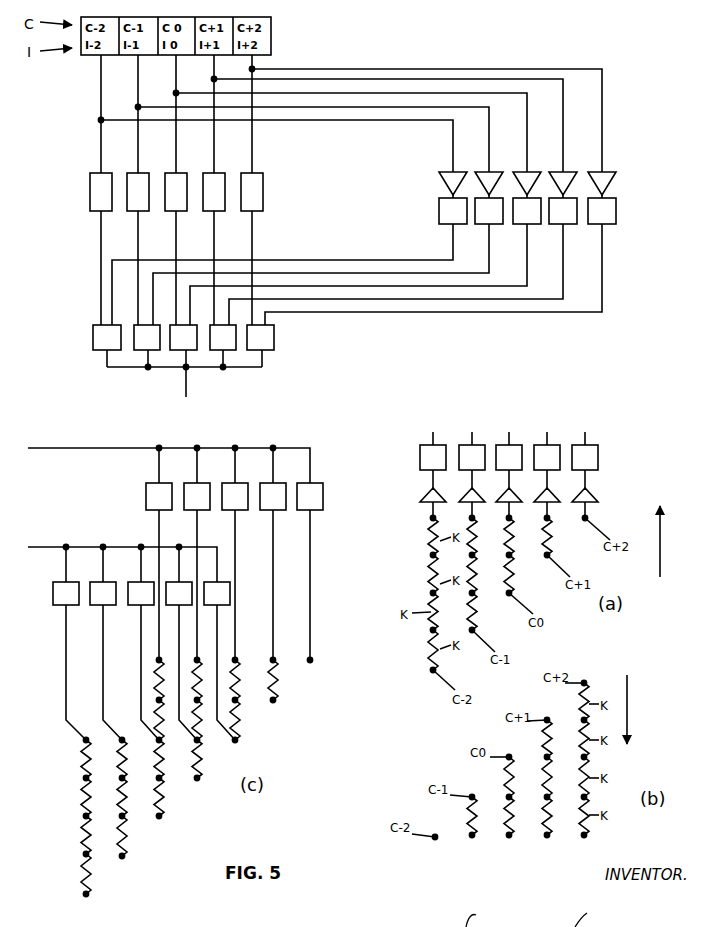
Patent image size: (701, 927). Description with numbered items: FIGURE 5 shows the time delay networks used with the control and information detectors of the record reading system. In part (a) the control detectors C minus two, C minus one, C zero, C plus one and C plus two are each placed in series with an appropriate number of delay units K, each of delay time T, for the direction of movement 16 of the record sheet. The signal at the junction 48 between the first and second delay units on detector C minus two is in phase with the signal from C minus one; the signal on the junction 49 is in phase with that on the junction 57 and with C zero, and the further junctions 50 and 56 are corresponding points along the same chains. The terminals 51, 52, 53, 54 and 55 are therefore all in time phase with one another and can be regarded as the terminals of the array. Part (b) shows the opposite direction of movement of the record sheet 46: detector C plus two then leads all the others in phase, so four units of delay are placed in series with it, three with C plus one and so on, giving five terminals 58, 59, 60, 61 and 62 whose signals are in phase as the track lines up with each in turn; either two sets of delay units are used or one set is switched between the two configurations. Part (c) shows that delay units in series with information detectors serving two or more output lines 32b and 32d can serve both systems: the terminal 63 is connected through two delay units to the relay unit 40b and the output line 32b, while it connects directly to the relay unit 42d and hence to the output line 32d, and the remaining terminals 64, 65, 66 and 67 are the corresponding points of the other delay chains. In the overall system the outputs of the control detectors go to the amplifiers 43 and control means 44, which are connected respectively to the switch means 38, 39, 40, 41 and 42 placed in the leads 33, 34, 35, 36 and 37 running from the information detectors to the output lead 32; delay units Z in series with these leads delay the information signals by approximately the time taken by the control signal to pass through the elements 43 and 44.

The direction of movement of the record sheet 16 is at (674, 541).
The output lead 32 is at (186, 380).
The output line 32b is at (80, 448).
The output line 32d is at (55, 547).
The lead 33 is at (101, 148).
The lead 34 is at (138, 148).
The lead 35 is at (176, 148).
The lead 36 is at (214, 148).
The lead 37 is at (252, 148).
The switch means 38 is at (107, 337).
The switch means 39 is at (147, 337).
The switch means 40 is at (183, 337).
The relay unit 40b is at (235, 483).
The switch means 41 is at (223, 337).
The switch means 42 is at (260, 337).
The relay unit 42d is at (217, 582).
The amplifiers 43 is at (614, 189).
The control means 44 is at (616, 212).
The record sheet 46 is at (640, 709).
The junction 48 is at (431, 631).
The junction 49 is at (431, 593).
The resistor tap 50 is at (431, 556).
The terminal 51 is at (431, 518).
The terminal 52 is at (470, 518).
The terminal 53 is at (507, 518).
The terminal 54 is at (545, 518).
The terminal 55 is at (583, 518).
The resistor tap 56 is at (470, 557).
The junction 57 is at (470, 595).
The terminal 58 is at (435, 840).
The terminal 59 is at (470, 838).
The terminal 60 is at (507, 838).
The terminal 61 is at (545, 838).
The terminal 62 is at (582, 838).
The terminal 63 is at (233, 742).
The resistor chain junction 64 is at (195, 742).
The resistor chain junction 65 is at (157, 742).
The resistor chain junction 66 is at (120, 742).
The resistor chain junction 67 is at (84, 742).